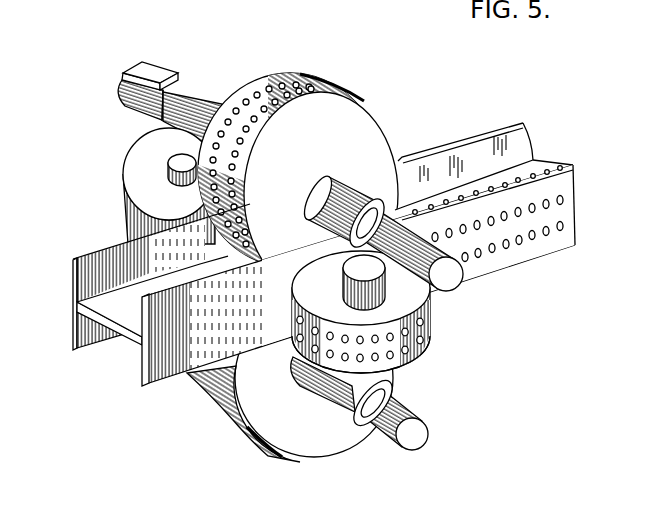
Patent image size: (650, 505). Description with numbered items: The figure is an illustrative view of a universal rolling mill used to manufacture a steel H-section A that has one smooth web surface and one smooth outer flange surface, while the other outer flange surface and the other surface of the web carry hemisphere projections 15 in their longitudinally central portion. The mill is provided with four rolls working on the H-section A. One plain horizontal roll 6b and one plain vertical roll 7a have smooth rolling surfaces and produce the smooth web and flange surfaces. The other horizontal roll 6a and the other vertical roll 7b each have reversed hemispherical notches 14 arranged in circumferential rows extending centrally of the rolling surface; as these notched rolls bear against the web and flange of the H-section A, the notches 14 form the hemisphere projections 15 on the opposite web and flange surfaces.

The horizontal roll 6a is at (372, 142).
The plain horizontal roll 6b is at (263, 423).
The plain vertical roll 7a is at (138, 182).
The vertical roll 7b is at (420, 352).
The reversed hemispherical notches 14 is at (323, 86).
The hemisphere projections 15 is at (505, 182).
The steel H-section A is at (143, 378).